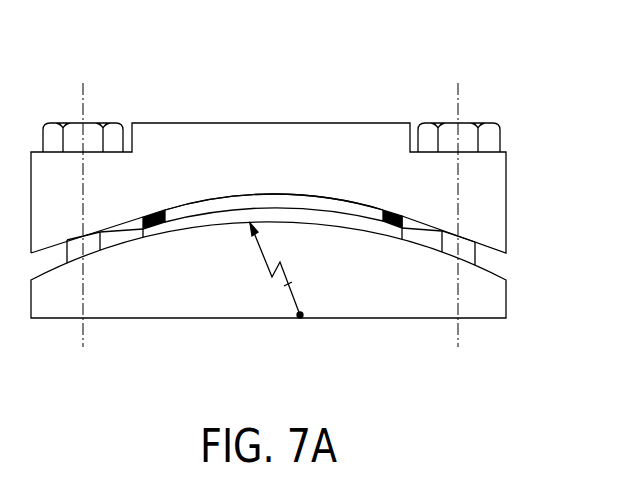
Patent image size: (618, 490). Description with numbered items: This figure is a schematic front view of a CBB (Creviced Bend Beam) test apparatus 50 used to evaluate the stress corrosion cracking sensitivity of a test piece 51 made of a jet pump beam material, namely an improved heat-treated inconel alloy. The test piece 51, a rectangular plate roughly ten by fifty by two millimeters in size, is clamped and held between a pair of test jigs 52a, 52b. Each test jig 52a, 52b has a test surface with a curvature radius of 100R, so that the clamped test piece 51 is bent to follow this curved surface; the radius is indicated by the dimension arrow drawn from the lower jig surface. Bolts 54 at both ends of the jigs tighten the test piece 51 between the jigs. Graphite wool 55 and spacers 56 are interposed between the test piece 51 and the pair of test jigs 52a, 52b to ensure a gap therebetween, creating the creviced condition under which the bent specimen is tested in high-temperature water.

The CBB test apparatus 50 is at (239, 86).
The test piece 51 is at (213, 223).
The test jig 52a is at (506, 299).
The test jig 52b is at (506, 201).
The bolt 54 is at (100, 123).
The graphite wool 55 is at (265, 201).
The spacer 56 is at (151, 216).
The curvature radius 100R is at (283, 268).